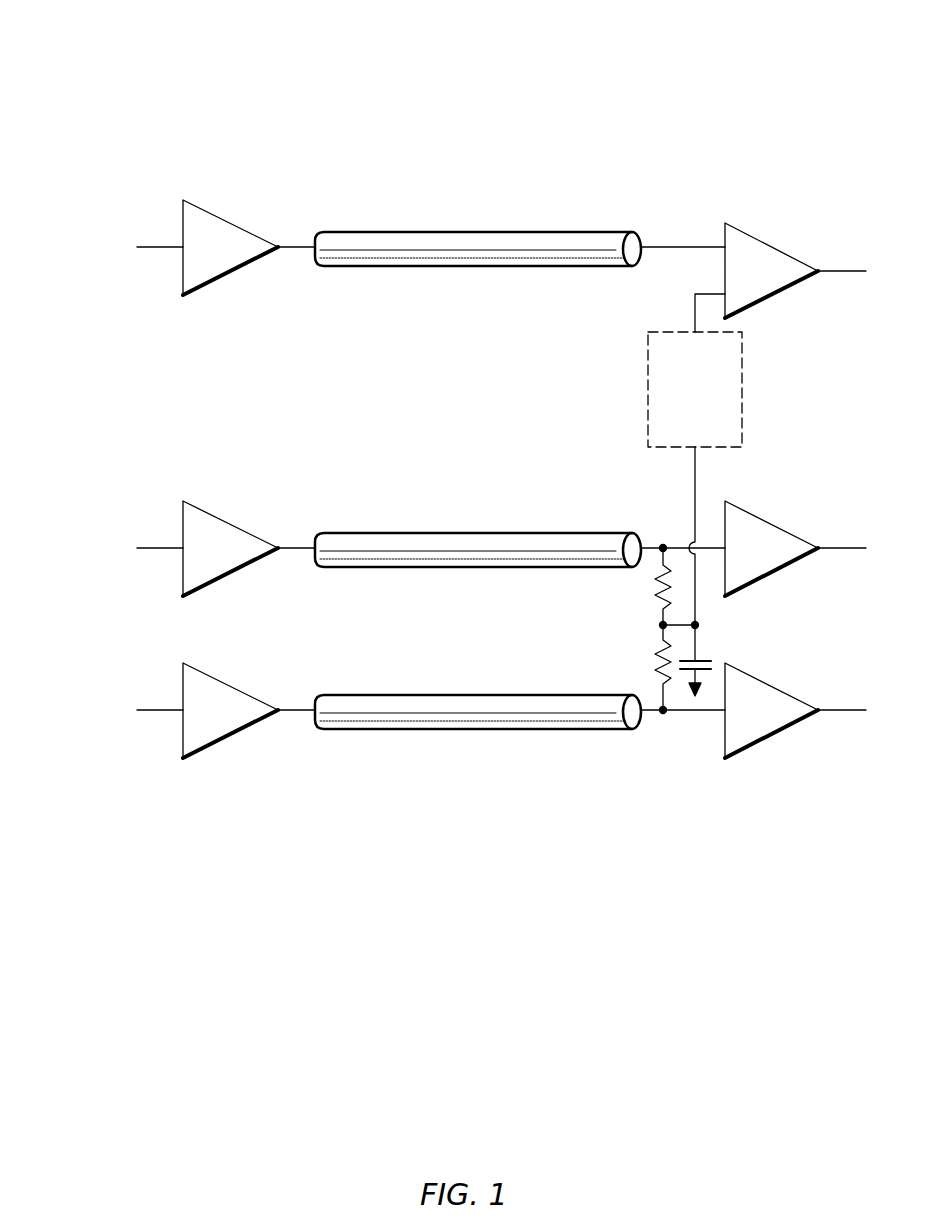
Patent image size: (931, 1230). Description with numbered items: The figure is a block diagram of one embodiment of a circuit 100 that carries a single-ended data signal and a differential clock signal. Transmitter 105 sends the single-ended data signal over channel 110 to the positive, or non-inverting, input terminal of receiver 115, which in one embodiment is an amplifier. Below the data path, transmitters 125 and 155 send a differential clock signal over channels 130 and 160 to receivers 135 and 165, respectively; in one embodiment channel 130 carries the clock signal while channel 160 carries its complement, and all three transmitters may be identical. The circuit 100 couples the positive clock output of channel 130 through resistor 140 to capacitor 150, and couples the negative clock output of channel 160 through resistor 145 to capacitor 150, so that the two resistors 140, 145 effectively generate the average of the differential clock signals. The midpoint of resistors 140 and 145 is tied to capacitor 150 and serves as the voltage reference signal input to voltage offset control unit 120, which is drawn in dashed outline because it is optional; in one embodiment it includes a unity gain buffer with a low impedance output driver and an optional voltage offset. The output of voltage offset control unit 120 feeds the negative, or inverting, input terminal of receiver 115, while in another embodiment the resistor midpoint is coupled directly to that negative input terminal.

The circuit 100 is at (678, 70).
The transmitter 105 is at (228, 220).
The channel 110 is at (473, 233).
The receiver 115 is at (770, 240).
The voltage offset control unit 120 is at (710, 437).
The transmitter 125 is at (228, 521).
The channel 130 is at (473, 534).
The receiver 135 is at (772, 525).
The resistor 140 is at (656, 599).
The resistor 145 is at (656, 653).
The capacitor 150 is at (712, 660).
The transmitter 155 is at (228, 683).
The channel 160 is at (473, 696).
The receiver 165 is at (772, 688).